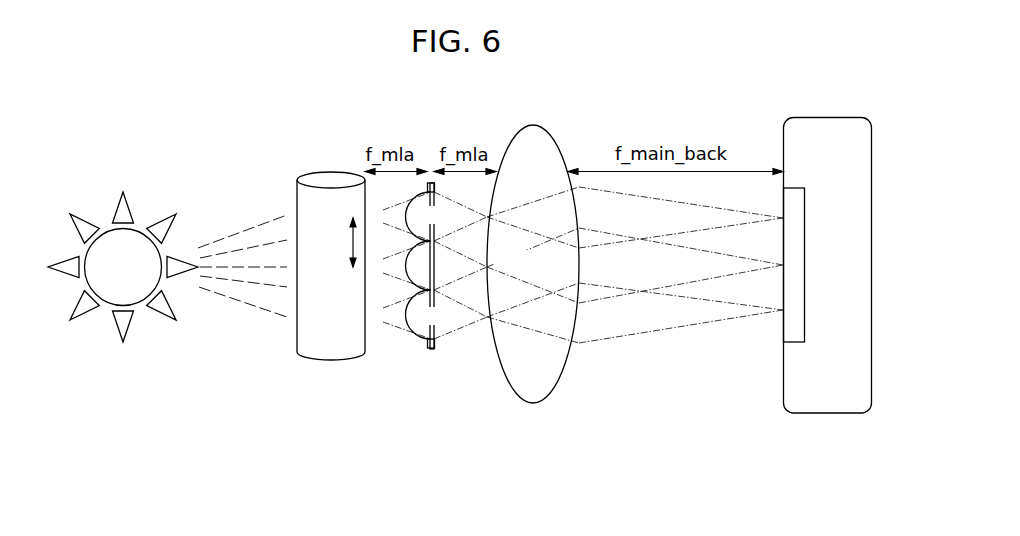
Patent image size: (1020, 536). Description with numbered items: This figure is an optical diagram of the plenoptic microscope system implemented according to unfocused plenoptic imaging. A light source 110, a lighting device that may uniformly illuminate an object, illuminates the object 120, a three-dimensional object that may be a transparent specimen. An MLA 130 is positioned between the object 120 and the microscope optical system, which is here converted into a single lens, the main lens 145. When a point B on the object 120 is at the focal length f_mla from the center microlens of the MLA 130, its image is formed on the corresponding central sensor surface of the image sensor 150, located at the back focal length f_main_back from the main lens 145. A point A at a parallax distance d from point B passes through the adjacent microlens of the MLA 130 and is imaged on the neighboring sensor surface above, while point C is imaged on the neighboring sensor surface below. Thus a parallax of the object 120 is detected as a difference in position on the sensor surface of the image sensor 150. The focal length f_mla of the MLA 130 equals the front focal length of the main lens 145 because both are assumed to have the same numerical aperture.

The light source 110 is at (108, 305).
The object 120 is at (330, 358).
The MLA 130 is at (429, 350).
The main lens 145 is at (532, 403).
The image sensor 150 is at (828, 413).